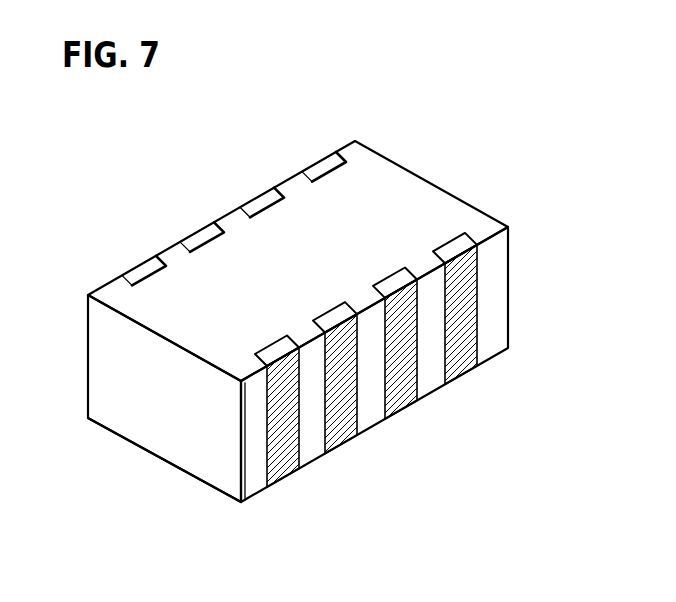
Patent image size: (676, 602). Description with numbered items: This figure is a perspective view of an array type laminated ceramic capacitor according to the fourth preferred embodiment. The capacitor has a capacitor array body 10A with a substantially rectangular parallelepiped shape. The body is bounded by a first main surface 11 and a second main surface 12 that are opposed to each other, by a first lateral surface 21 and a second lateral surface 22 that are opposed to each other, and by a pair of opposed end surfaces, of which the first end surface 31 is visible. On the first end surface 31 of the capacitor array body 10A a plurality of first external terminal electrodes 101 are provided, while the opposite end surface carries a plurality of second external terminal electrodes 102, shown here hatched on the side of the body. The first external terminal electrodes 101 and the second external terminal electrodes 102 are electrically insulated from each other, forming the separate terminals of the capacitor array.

The capacitor array body 10A is at (320, 321).
The first main surface 11 is at (320, 344).
The second main surface 12 is at (187, 478).
The first lateral surface 21 is at (145, 430).
The second lateral surface 22 is at (425, 230).
The first end surface 31 is at (182, 265).
The first external terminal electrodes 101 is at (193, 228).
The second external terminal electrodes 102 is at (397, 400).